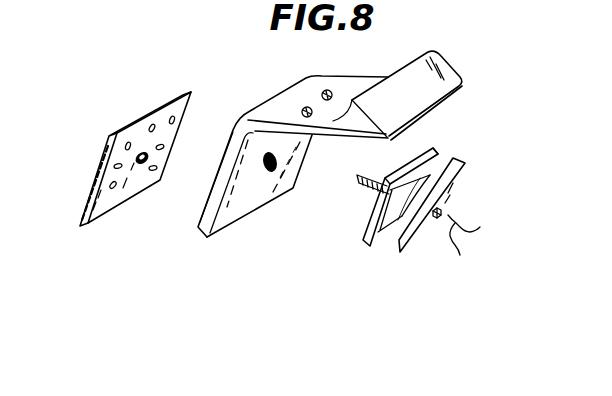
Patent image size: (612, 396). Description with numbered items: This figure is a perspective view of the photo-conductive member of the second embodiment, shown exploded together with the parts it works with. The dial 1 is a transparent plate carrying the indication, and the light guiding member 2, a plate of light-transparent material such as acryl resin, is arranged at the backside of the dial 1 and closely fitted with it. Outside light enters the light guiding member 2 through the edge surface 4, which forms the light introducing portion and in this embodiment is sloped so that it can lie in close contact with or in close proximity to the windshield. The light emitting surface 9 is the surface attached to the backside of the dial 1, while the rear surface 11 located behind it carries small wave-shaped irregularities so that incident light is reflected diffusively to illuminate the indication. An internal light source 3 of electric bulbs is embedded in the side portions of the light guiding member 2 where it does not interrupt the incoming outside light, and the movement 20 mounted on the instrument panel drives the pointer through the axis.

The dial 1 is at (103, 159).
The light guiding member 2 is at (265, 91).
The internal light source 3 is at (310, 115).
The edge surface 4 is at (456, 74).
The light emitting surface 9 is at (203, 204).
The rear surface 11 is at (248, 204).
The movement 20 is at (452, 178).